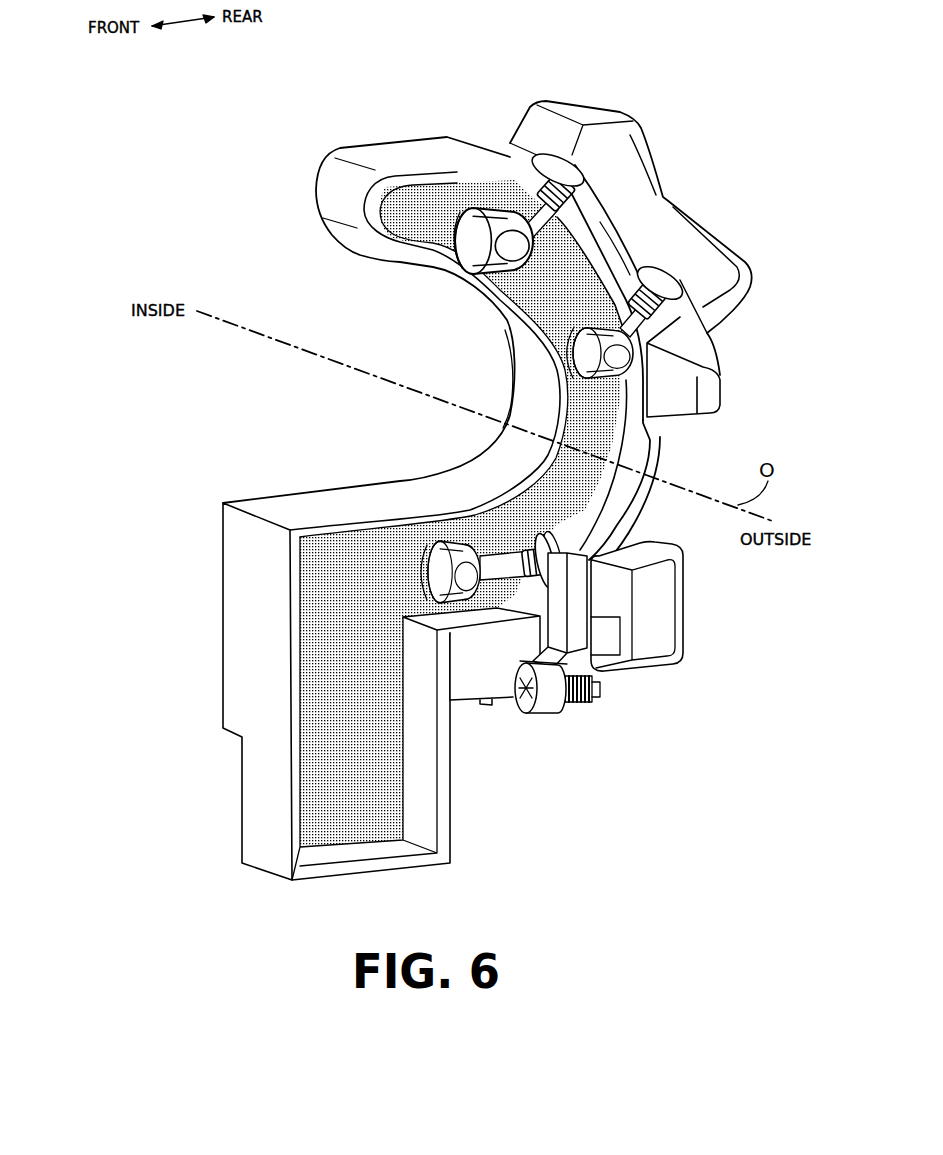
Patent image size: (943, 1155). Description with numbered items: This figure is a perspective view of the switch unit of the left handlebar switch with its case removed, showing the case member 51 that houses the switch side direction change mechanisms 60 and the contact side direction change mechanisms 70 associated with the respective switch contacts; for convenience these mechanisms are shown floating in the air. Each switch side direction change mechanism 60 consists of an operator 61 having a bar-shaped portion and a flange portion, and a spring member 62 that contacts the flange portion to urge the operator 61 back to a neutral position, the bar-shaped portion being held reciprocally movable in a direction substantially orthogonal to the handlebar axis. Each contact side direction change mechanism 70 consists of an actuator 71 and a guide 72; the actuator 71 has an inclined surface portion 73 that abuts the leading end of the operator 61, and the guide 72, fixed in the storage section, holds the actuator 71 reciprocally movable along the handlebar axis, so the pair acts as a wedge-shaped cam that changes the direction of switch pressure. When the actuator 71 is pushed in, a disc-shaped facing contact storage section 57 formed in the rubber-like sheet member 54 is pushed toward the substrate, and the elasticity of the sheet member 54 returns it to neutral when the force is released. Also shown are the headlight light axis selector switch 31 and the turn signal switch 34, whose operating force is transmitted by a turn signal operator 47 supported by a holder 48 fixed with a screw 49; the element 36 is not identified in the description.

The headlight light axis selector switch 31 is at (572, 108).
The turn signal switch 34 is at (662, 607).
The hook portion 36 is at (717, 395).
The turn signal operator 47 is at (600, 655).
The holder 48 is at (490, 700).
The screw 49 is at (577, 703).
The case member 51 is at (368, 155).
The sheet member 54 is at (413, 195).
The facing contact storage section 57 is at (460, 247).
The switch side direction change mechanism 60 is at (583, 180).
The operator 61 is at (577, 200).
The spring member 62 is at (522, 150).
The contact side direction change mechanism 70 is at (468, 212).
The actuator 71 is at (518, 266).
The guide 72 is at (467, 280).
The inclined surface portion 73 is at (553, 240).